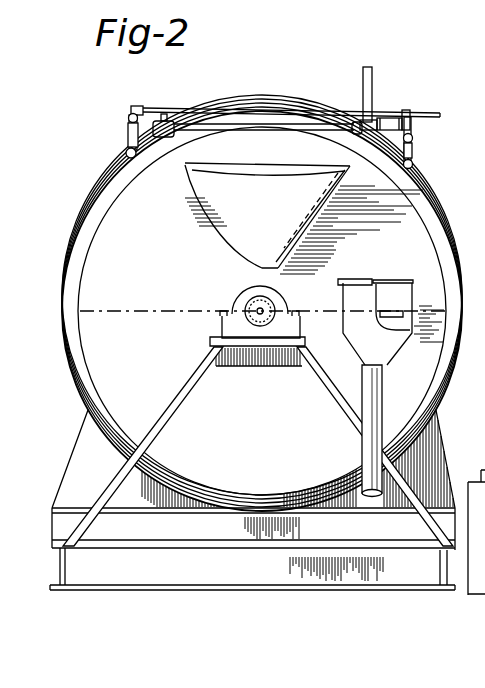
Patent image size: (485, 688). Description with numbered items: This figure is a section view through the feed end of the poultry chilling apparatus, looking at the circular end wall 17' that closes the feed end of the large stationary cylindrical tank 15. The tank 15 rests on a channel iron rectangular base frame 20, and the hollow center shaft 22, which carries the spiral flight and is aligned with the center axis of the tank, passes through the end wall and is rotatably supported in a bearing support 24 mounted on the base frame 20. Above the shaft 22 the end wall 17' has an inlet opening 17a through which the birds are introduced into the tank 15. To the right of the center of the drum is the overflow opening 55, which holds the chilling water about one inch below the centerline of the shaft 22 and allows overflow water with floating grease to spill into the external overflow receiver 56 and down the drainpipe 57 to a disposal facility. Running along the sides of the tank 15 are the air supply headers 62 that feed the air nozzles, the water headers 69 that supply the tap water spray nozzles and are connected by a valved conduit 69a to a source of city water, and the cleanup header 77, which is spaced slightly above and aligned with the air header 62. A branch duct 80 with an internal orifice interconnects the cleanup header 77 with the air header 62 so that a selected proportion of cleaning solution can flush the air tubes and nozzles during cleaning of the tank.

The cylindrical tank 15 is at (446, 182).
The inlet opening 17a is at (196, 161).
The circular end wall 17' is at (129, 285).
The base frame 20 is at (210, 578).
The hollow center shaft 22 is at (220, 321).
The bearing support 24 is at (233, 298).
The overflow opening 55 is at (397, 308).
The overflow receiver 56 is at (345, 300).
The drainpipe 57 is at (385, 376).
The air supply header 62 is at (127, 150).
The water header 69 is at (163, 119).
The valved conduit 69a is at (363, 72).
The cleanup header 77 is at (132, 113).
The branch duct 80 is at (128, 130).